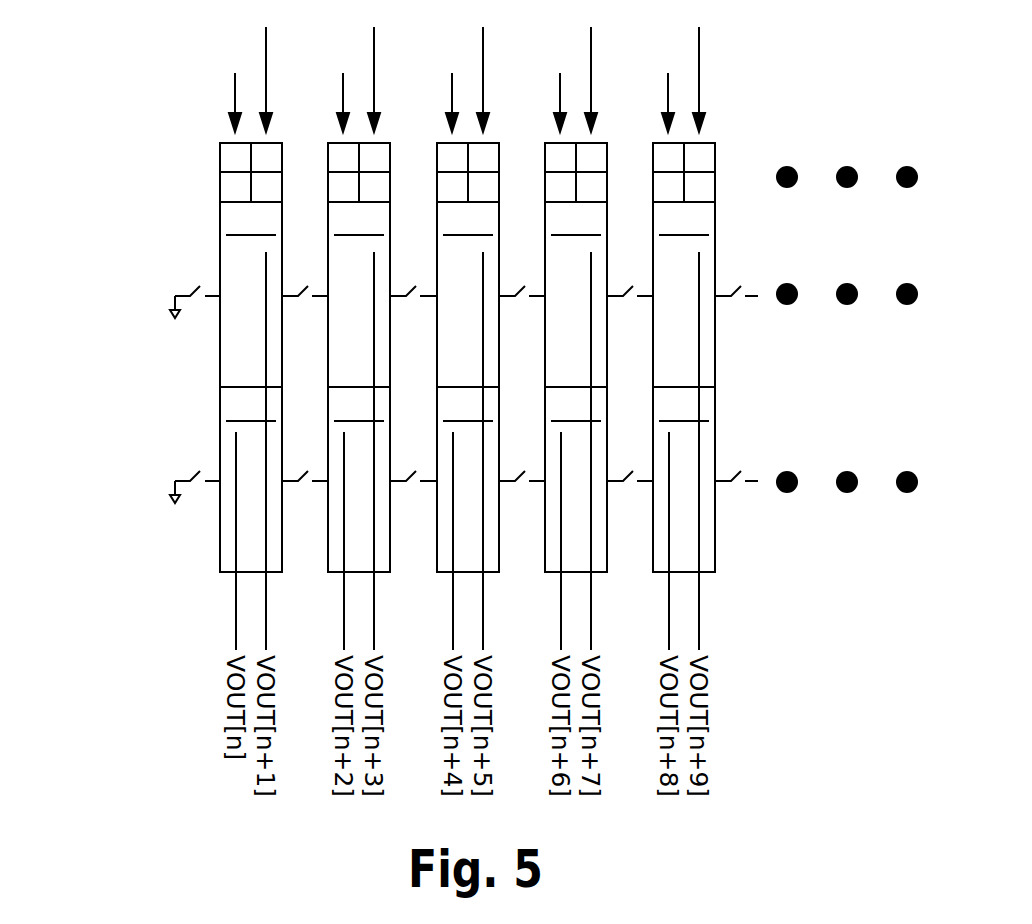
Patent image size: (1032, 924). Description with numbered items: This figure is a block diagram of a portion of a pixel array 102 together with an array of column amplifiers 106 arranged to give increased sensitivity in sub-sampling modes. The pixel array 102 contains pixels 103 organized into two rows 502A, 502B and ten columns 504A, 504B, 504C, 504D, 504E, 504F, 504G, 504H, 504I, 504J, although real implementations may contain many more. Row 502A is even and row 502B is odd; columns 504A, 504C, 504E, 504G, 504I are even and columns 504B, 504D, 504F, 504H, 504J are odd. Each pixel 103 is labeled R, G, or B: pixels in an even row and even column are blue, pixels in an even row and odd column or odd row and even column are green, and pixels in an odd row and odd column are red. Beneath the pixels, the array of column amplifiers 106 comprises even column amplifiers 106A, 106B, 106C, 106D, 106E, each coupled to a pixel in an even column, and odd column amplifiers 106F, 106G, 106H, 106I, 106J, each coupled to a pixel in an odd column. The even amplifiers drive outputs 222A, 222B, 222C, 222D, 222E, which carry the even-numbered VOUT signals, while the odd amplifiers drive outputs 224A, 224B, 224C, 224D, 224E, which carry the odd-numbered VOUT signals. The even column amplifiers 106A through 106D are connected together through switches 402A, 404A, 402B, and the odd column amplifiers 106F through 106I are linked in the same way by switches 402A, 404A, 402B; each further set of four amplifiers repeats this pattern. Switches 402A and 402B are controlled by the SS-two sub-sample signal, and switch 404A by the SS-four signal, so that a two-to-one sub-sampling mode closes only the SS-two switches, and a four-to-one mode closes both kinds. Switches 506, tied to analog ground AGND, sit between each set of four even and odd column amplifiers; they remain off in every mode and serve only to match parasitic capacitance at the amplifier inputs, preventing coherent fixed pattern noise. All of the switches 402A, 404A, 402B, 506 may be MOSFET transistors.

The pixel array 102 is at (214, 141).
The pixel 103 is at (327, 187).
The array of column amplifiers 106 is at (108, 321).
The even column amplifier 106A is at (251, 479).
The even column amplifier 106B is at (359, 479).
The even column amplifier 106C is at (468, 479).
The even column amplifier 106D is at (576, 479).
The even column amplifier 106E is at (684, 479).
The odd column amplifier 106F is at (251, 387).
The odd column amplifier 106G is at (359, 387).
The odd column amplifier 106H is at (468, 387).
The odd column amplifier 106I is at (576, 387).
The odd column amplifier 106J is at (684, 387).
The output 222A is at (235, 603).
The output 222B is at (343, 620).
The output 222C is at (452, 620).
The output 222D is at (560, 620).
The output 222E is at (668, 620).
The output 224A is at (267, 577).
The output 224B is at (375, 577).
The output 224C is at (484, 577).
The output 224D is at (592, 577).
The output 224E is at (700, 577).
The switch 402A is at (306, 289).
The switch 402B is at (523, 289).
The switch 404A is at (414, 289).
The row 502A is at (200, 160).
The row 502B is at (200, 188).
The column 504A is at (229, 89).
The column 504B is at (264, 66).
The column 504C is at (337, 89).
The column 504D is at (372, 66).
The column 504E is at (446, 89).
The column 504F is at (480, 66).
The column 504G is at (553, 89).
The column 504H is at (588, 66).
The column 504I is at (660, 89).
The column 504J is at (695, 66).
The switch 506 is at (197, 291).